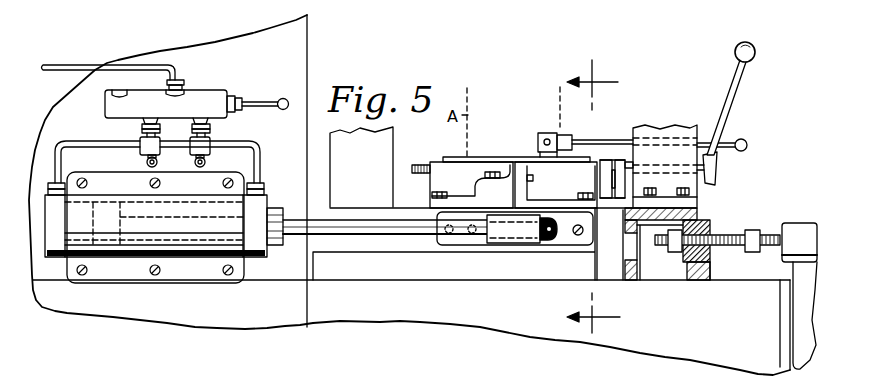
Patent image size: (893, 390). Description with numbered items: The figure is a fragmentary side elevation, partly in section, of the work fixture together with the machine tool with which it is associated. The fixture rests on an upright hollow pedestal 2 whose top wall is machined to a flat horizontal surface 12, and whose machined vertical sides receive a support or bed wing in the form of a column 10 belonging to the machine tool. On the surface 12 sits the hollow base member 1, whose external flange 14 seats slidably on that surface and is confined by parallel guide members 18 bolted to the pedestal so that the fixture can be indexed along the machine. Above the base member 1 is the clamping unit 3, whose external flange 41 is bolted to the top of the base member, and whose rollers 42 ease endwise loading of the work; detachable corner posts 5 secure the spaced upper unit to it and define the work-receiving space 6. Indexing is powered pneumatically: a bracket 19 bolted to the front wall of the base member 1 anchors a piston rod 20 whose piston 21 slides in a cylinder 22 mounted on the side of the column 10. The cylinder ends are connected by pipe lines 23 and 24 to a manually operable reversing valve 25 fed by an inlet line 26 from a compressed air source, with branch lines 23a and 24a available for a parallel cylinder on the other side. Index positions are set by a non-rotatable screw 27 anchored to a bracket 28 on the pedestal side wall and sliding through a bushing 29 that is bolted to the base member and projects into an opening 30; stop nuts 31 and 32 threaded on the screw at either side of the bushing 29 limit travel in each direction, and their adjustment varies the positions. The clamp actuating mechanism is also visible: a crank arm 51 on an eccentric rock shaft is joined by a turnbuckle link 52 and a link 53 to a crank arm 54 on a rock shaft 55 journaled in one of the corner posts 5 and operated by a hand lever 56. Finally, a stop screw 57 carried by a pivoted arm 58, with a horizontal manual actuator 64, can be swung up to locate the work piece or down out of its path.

The base member 1 is at (338, 210).
The pedestal 2 is at (721, 345).
The unit 3 is at (436, 166).
The corner posts 5 is at (388, 150).
The space 6 is at (601, 196).
The column 10 is at (300, 70).
The flat horizontal surface 12 is at (740, 282).
The external flange 14 is at (711, 279).
The guide members 18 is at (553, 277).
The bracket 19 is at (465, 246).
The piston rod 20 is at (358, 222).
The piston 21 is at (123, 242).
The cylinder 22 is at (205, 190).
The pipe line 23 is at (98, 141).
The pipe line 23a is at (146, 162).
The pipe line 24 is at (259, 161).
The pipe line 24a is at (206, 162).
The reversing valve 25 is at (210, 93).
The inlet line 26 is at (70, 66).
The screw 27 is at (734, 235).
The bracket 28 is at (794, 227).
The bushing 29 is at (703, 222).
The opening 30 is at (695, 258).
The stop nut 31 is at (755, 230).
The stop nut 32 is at (670, 247).
The external flange 41 is at (553, 200).
The rollers 42 is at (488, 157).
The crank arm 51 is at (605, 160).
The turnbuckle link 52 is at (600, 188).
The link 53 is at (612, 198).
The crank arm 54 is at (618, 160).
The rock shaft 55 is at (665, 155).
The hand lever 56 is at (731, 97).
The stop screw 57 is at (548, 139).
The arm 58 is at (538, 143).
The manual actuator 64 is at (727, 142).